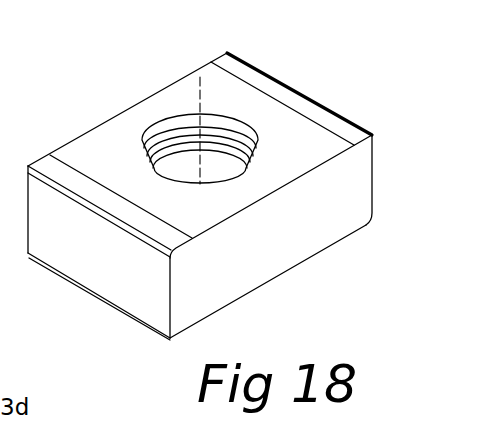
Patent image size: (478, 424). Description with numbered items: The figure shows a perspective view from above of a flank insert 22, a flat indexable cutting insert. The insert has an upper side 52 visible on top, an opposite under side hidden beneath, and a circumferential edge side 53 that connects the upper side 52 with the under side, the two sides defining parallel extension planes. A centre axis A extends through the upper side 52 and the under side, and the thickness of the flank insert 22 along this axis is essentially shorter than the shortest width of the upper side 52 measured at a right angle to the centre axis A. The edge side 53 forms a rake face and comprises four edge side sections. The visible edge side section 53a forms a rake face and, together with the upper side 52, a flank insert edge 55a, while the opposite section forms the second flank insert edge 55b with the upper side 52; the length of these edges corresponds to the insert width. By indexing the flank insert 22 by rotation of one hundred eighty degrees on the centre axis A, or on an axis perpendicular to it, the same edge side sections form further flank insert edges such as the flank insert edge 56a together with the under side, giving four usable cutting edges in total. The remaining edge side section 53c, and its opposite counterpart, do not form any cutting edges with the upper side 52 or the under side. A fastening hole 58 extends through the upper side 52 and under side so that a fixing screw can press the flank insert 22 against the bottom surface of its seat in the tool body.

The flank insert 22 is at (300, 62).
The upper side 52 is at (123, 141).
The edge side 53 is at (373, 176).
The edge side section 53a is at (310, 225).
The edge side section 53c is at (58, 240).
The flank insert edge 55a is at (326, 160).
The flank insert edge 55b is at (60, 148).
The flank insert edge 56a is at (209, 318).
The fastening hole 58 is at (187, 167).
The centre axis A is at (201, 93).